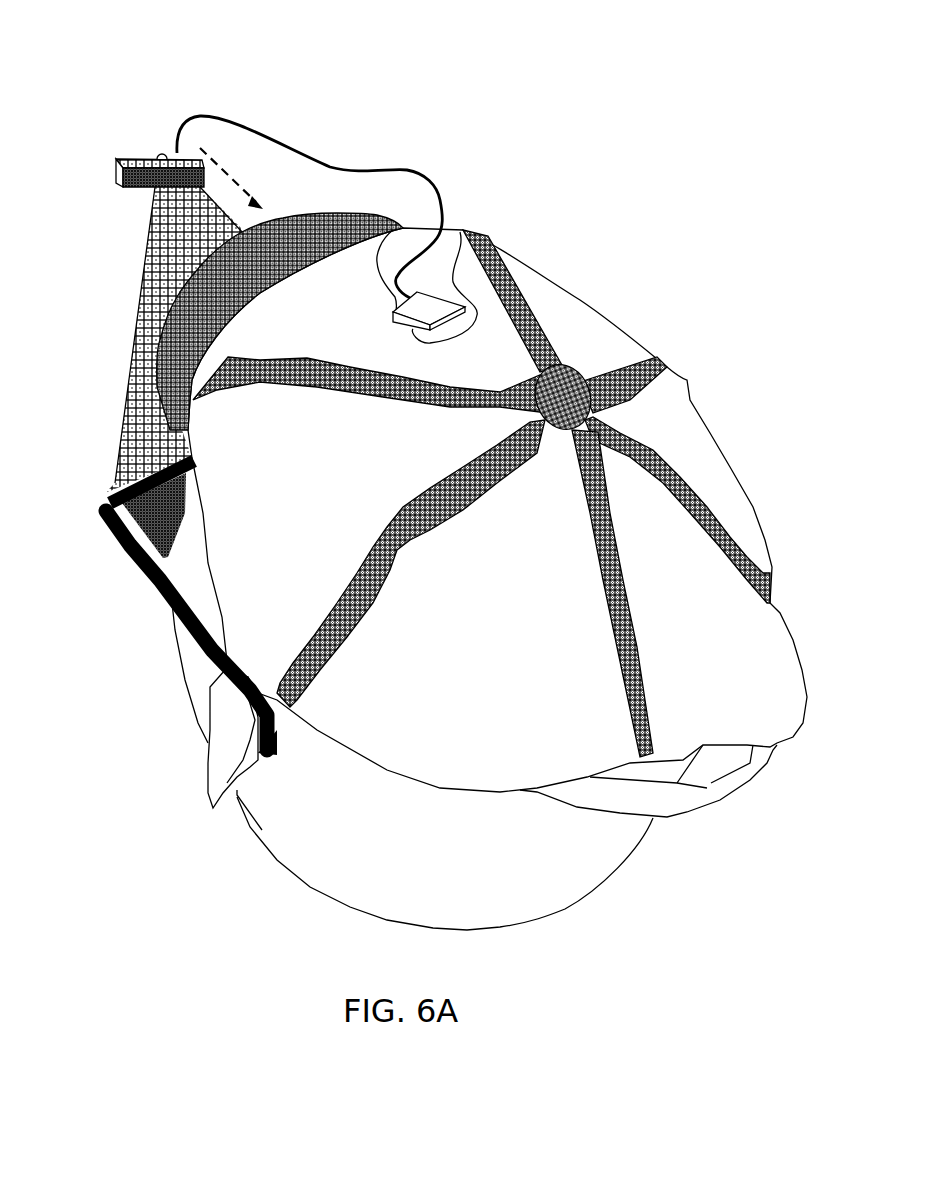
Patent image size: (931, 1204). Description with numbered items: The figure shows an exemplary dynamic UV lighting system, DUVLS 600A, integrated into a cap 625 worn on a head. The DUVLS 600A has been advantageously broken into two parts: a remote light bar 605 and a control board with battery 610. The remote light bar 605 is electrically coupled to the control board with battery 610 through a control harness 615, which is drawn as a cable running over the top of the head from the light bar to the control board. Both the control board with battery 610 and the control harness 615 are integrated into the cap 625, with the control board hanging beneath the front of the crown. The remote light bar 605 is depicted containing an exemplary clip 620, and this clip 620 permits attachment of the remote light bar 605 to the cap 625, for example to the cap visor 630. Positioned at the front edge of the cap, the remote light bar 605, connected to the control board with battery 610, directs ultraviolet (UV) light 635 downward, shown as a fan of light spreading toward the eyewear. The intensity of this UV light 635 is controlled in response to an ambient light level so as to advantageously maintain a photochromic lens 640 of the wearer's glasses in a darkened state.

The DUVLS 600A is at (252, 104).
The remote light bar 605 is at (117, 167).
The control board with battery 610 is at (413, 329).
The control harness 615 is at (330, 157).
The clip 620 is at (158, 155).
The cap 625 is at (629, 308).
The cap visor 630 is at (140, 325).
The ultraviolet (UV) light 635 is at (158, 249).
The photochromic lens 640 is at (162, 500).